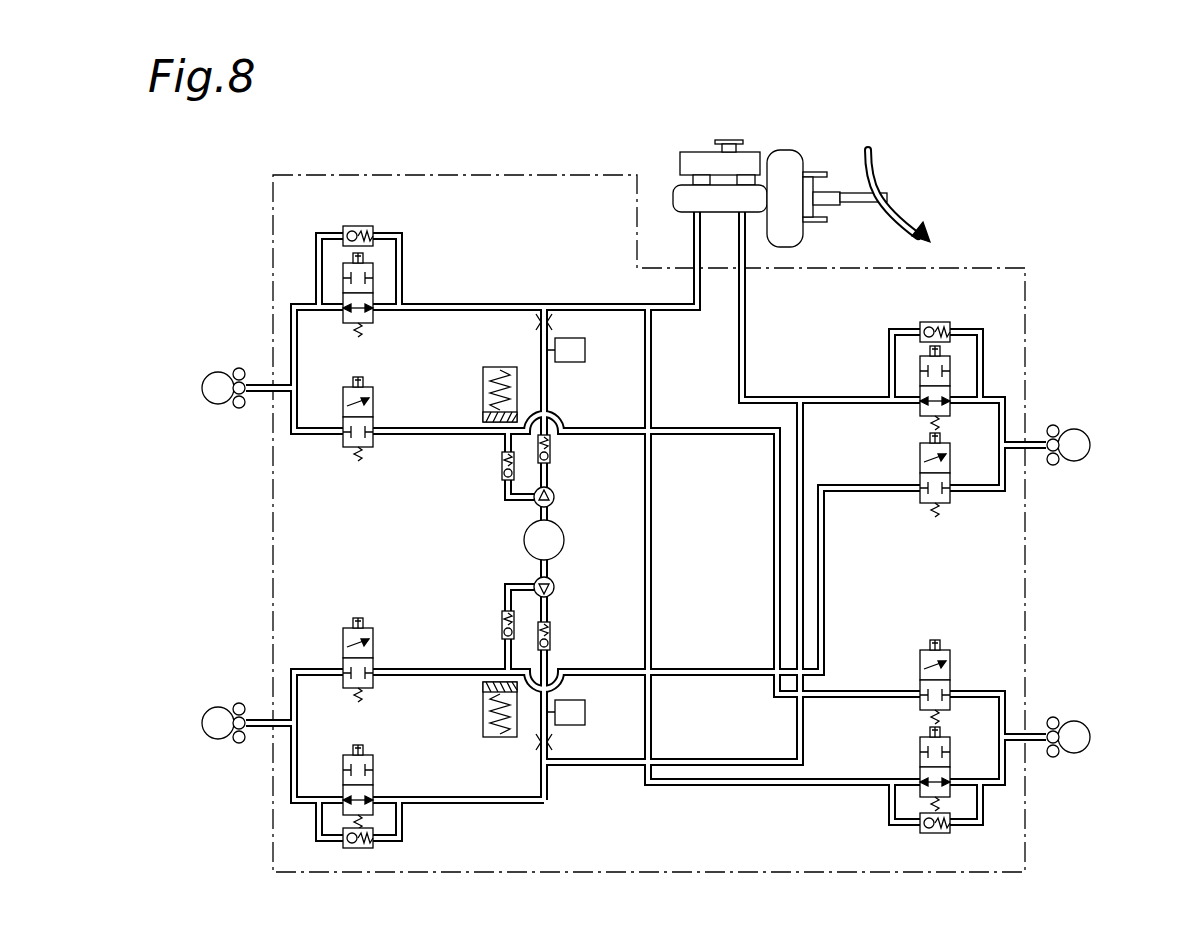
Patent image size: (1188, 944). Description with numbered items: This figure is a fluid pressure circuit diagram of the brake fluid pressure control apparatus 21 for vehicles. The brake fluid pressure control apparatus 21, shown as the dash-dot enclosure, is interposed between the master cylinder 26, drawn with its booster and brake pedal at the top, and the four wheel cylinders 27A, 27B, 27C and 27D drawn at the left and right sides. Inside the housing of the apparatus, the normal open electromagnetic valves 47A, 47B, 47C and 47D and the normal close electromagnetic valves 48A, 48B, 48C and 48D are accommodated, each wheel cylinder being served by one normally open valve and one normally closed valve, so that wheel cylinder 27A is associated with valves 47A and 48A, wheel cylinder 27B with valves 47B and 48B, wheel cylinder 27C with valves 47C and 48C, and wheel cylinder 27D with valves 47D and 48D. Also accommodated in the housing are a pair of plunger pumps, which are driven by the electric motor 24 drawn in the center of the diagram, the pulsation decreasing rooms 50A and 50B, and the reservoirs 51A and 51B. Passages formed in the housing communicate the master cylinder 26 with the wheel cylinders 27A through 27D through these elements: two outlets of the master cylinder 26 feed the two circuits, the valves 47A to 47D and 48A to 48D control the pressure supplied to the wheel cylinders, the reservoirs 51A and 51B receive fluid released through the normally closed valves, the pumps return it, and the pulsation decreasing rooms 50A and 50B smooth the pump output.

The brake fluid pressure control apparatus 21 is at (1004, 263).
The electric motor 24 is at (565, 540).
The master cylinder 26 is at (789, 148).
The wheel cylinder 27A is at (204, 382).
The wheel cylinder 27B is at (1086, 725).
The wheel cylinder 27C is at (206, 713).
The wheel cylinder 27D is at (1086, 432).
The normal open electromagnetic valve 47A is at (376, 318).
The normal open electromagnetic valve 47B is at (918, 745).
The normal open electromagnetic valve 47C is at (376, 782).
The normal open electromagnetic valve 47D is at (918, 411).
The normal close electromagnetic valve 48A is at (376, 445).
The normal close electromagnetic valve 48B is at (918, 660).
The normal close electromagnetic valve 48C is at (376, 642).
The normal close electromagnetic valve 48D is at (918, 500).
The pulsation decreasing room 50A is at (575, 362).
The pulsation decreasing room 50B is at (577, 725).
The reservoir 51A is at (483, 383).
The reservoir 51B is at (483, 712).